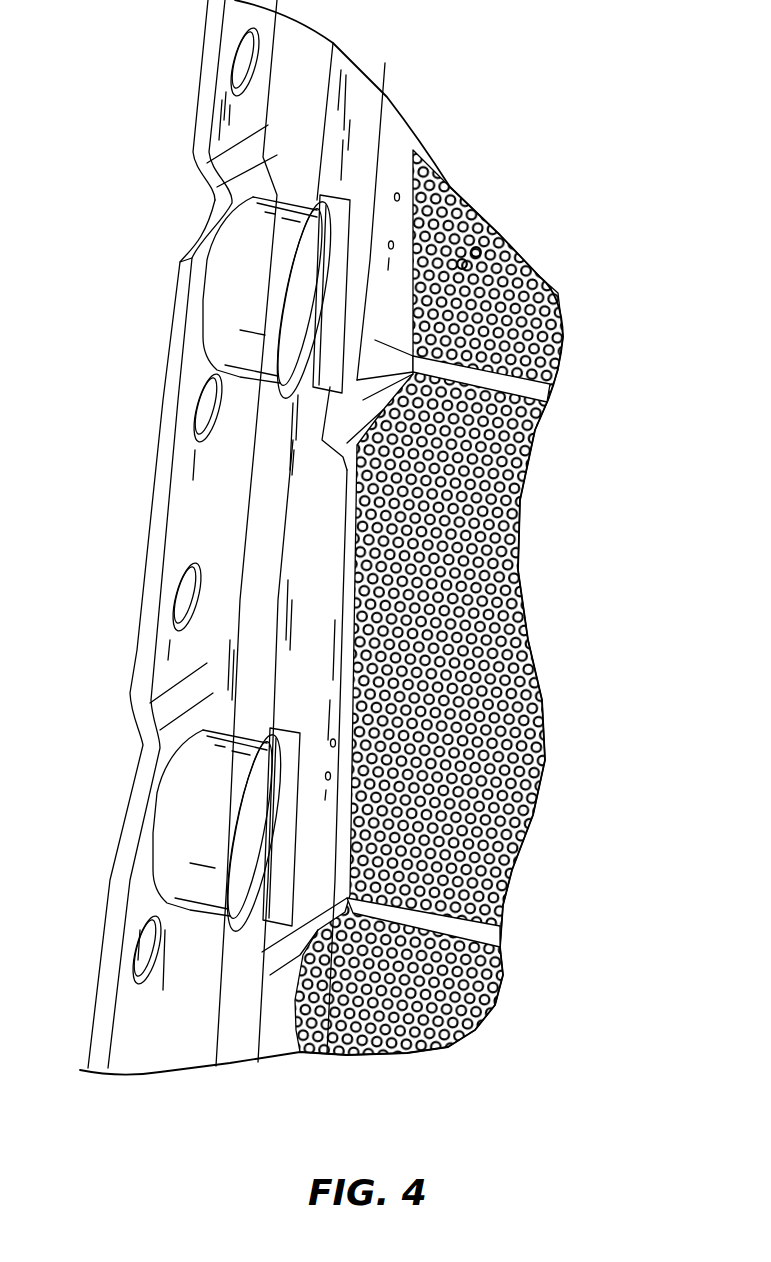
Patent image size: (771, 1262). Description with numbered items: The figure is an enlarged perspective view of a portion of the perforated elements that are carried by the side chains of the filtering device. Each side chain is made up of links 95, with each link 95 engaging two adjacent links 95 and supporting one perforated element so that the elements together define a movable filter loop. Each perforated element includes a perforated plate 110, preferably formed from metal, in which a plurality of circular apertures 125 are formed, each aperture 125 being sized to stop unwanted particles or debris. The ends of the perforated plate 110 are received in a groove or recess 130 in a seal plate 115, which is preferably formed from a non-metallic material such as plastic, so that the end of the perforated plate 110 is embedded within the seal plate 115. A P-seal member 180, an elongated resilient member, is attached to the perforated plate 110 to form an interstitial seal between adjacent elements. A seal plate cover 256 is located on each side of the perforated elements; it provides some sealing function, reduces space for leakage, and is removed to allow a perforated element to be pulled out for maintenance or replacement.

The link 95 is at (230, 25).
The perforated plate 110 is at (553, 303).
The seal plate 115 is at (373, 107).
The aperture 125 is at (460, 263).
The groove or recess 130 is at (400, 250).
The P-seal member 180 is at (527, 395).
The seal plate cover 256 is at (320, 247).